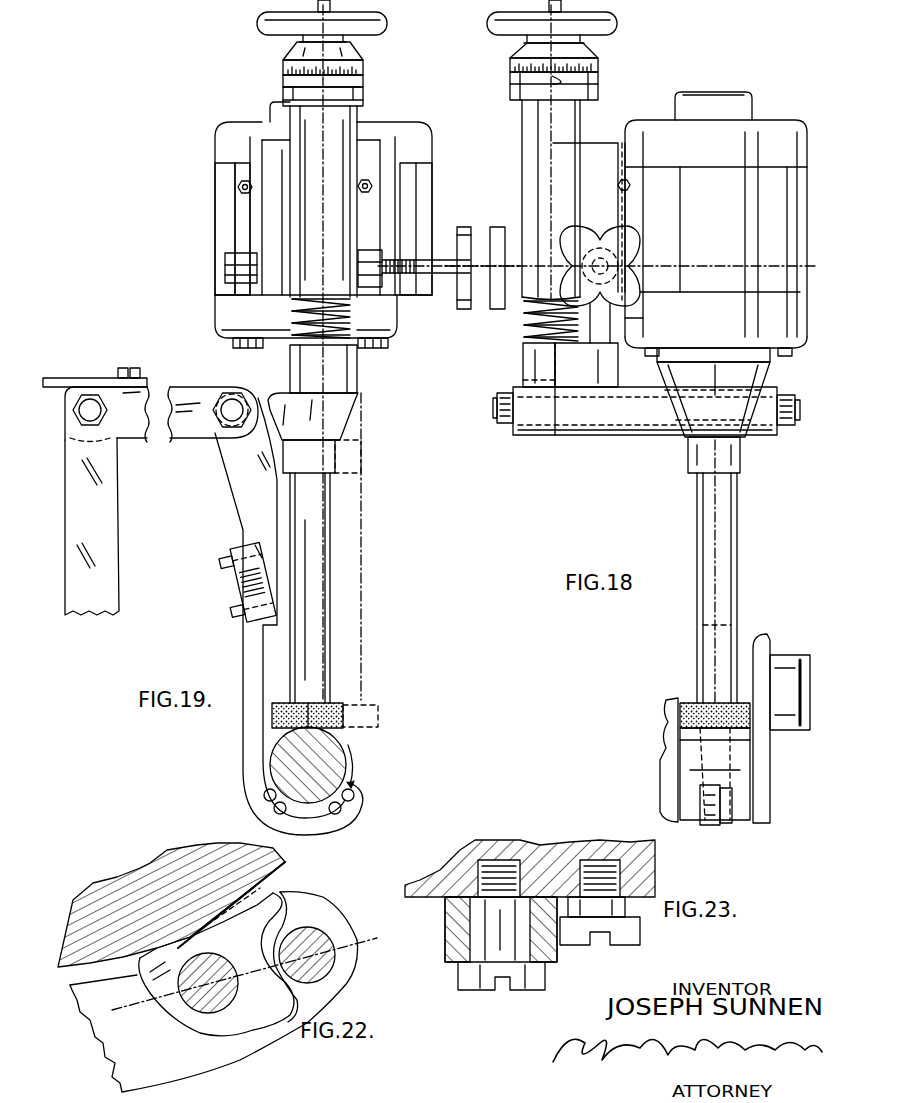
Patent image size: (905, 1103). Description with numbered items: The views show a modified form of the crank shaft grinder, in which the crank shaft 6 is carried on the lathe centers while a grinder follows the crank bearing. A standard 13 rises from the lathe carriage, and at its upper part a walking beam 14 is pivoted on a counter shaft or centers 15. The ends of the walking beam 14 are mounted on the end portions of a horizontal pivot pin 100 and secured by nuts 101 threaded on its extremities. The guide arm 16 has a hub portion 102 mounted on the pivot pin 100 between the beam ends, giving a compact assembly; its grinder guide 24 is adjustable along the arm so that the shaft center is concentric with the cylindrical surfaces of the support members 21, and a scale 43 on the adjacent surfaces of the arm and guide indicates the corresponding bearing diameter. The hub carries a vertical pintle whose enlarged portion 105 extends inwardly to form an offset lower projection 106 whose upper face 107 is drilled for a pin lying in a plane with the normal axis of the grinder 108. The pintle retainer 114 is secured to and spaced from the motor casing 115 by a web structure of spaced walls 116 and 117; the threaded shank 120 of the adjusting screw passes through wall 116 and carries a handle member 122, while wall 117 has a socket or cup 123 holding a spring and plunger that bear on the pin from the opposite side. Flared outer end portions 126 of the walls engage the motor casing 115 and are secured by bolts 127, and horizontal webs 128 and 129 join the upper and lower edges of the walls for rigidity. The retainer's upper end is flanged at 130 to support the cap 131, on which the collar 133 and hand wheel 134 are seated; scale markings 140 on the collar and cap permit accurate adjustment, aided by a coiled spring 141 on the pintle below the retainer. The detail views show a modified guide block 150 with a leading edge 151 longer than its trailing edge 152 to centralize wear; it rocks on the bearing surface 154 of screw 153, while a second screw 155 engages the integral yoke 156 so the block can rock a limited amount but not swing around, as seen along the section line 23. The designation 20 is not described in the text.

In FIG. 18, the crank shaft 6 is at (770, 765).
In FIG. 19, the standard 13 is at (108, 540).
In FIG. 19, the walking beam 14 is at (178, 390).
In FIG. 18, the walking beam 14 is at (542, 435).
In FIG. 19, the counter shaft or centers 15 is at (88, 405).
In FIG. 19, the guide arm 16 is at (236, 500).
In FIG. 18, the guide arm 16 is at (735, 552).
In FIG. 19, the spindle housing 20 is at (328, 418).
In FIG. 19, the support members 21 is at (511, 258).
In FIG. 18, the support members 21 is at (511, 258).
In FIG. 22, the section line 23— 23 is at (118, 993).
In FIG. 19, the grinder guide 24 is at (250, 742).
In FIG. 22, the grinder guide 24 is at (227, 1052).
In FIG. 19, the scale 43 is at (236, 594).
In FIG. 19, the horizontal pivot pin 100 is at (228, 420).
In FIG. 18, the horizontal pivot pin 100 is at (490, 420).
In FIG. 19, the nuts 101 is at (222, 392).
In FIG. 18, the nuts 101 is at (503, 425).
In FIG. 18, the hub portion 102 is at (640, 435).
In FIG. 19, the enlarged portion 105 is at (352, 385).
In FIG. 18, the enlarged portion 105 is at (523, 364).
In FIG. 18, the offset lower projection 106 is at (614, 368).
In FIG. 18, the upper face 107 is at (622, 330).
In FIG. 19, the grinder 108 is at (333, 712).
In FIG. 18, the grinder 108 is at (700, 710).
In FIG. 19, the pintle retainer 114 is at (305, 195).
In FIG. 18, the pintle retainer 114 is at (532, 146).
In FIG. 19, the motor casing 115 is at (225, 146).
In FIG. 18, the motor casing 115 is at (782, 130).
In FIG. 18, the wall 116 is at (603, 152).
In FIG. 19, the wall 117 is at (228, 218).
In FIG. 19, the threaded shank 120 is at (412, 280).
In FIG. 19, the handle member 122 is at (465, 225).
In FIG. 18, the handle member 122 is at (583, 238).
In FIG. 19, the socket or cup 123 is at (232, 270).
In FIG. 19, the flared outer end portions 126 is at (240, 238).
In FIG. 19, the bolts 127 is at (236, 187).
In FIG. 19, the horizontal web 128 is at (288, 146).
In FIG. 19, the horizontal web 129 is at (270, 297).
In FIG. 19, the flange 130 is at (364, 97).
In FIG. 18, the flange 130 is at (600, 95).
In FIG. 19, the cap 131 is at (365, 81).
In FIG. 19, the collar 133 is at (358, 52).
In FIG. 18, the collar 133 is at (590, 50).
In FIG. 19, the hand wheel 134 is at (385, 24).
In FIG. 18, the hand wheel 134 is at (613, 14).
In FIG. 19, the scale markings 140 is at (365, 68).
In FIG. 18, the scale markings 140 is at (600, 68).
In FIG. 19, the coiled spring 141 is at (380, 327).
In FIG. 18, the coiled spring 141 is at (524, 322).
In FIG. 22, the guide block 150 is at (187, 1022).
In FIG. 22, the leading edge 151 is at (167, 912).
In FIG. 22, the trailing edge 152 is at (153, 958).
In FIG. 23, the screw 153 is at (495, 870).
In FIG. 23, the bearing surface 154 is at (498, 942).
In FIG. 23, the second screw 155 is at (620, 912).
In FIG. 22, the yoke 156 is at (313, 895).